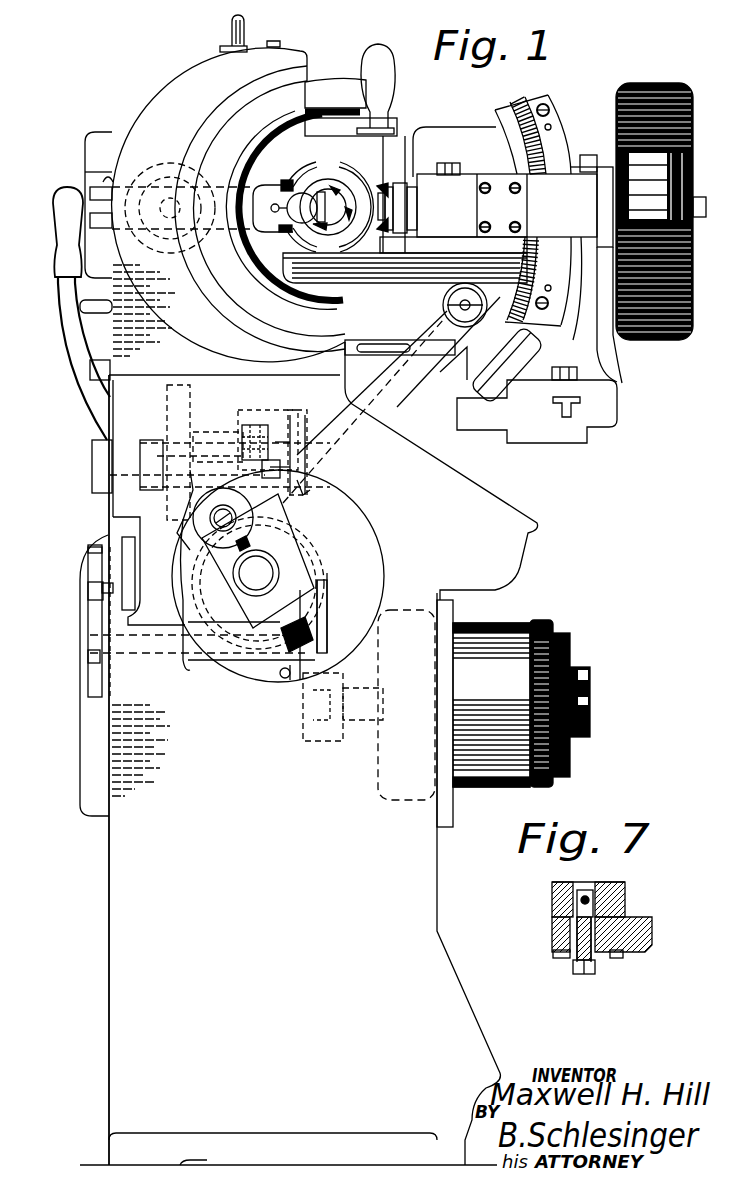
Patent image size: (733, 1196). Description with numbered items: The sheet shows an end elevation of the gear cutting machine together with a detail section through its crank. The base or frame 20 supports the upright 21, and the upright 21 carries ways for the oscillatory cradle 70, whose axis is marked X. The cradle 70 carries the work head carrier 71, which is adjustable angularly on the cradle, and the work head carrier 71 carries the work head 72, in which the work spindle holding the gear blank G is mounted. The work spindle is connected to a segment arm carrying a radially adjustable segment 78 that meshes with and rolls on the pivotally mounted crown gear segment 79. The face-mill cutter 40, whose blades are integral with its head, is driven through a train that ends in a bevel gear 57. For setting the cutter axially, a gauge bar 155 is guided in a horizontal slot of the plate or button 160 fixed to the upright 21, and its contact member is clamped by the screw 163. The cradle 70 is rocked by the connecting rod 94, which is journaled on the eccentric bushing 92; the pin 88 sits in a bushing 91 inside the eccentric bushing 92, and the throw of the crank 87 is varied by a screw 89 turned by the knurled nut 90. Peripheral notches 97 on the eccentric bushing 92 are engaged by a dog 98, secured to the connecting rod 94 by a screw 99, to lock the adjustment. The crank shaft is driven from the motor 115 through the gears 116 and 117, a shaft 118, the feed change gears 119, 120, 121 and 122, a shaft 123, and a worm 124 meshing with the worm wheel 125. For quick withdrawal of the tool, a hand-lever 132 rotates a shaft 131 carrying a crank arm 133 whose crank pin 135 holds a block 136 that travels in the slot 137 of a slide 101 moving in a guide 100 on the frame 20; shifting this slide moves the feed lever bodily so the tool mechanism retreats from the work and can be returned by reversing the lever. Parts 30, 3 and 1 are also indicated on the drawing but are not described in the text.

In FIG. 1, the base or frame 20 is at (113, 960).
In FIG. 1, the upright 21 is at (160, 102).
In FIG. 1, the pin 30 is at (232, 35).
In FIG. 1, the hand-lever 132 is at (63, 327).
In FIG. 1, the plate or button 160 is at (173, 163).
In FIG. 1, the face-mill cutter 40 is at (337, 200).
In FIG. 1, the axis of the cradle X is at (328, 205).
In FIG. 1, the bar 155 is at (262, 190).
In FIG. 1, the screw 163 is at (286, 180).
In FIG. 1, the oscillatory cradle 70 is at (333, 86).
In FIG. 1, the gear blank G is at (386, 185).
In FIG. 1, the work head carrier 71 is at (413, 247).
In FIG. 1, the work head 72 is at (463, 183).
In FIG. 1, the crown gear segment 79 is at (533, 96).
In FIG. 1, the radially adjustable segment 78 is at (538, 245).
In FIG. 1, the pivot 3 is at (447, 305).
In FIG. 1, the connecting rod 94 is at (400, 410).
In FIG. 7, the connecting rod 94 is at (648, 922).
In FIG. 1, the shaft 131 is at (152, 438).
In FIG. 1, the crank arm 133 is at (213, 447).
In FIG. 1, the crank pin 135 is at (264, 432).
In FIG. 1, the guide 100 is at (247, 413).
In FIG. 1, the block 136 is at (281, 418).
In FIG. 1, the slide 101 is at (287, 422).
In FIG. 1, the slot 137 is at (298, 443).
In FIG. 1, the screw 99 is at (287, 467).
In FIG. 1, the dog 98 is at (303, 495).
In FIG. 7, the dog 98 is at (623, 957).
In FIG. 1, the worm wheel 125 is at (323, 557).
In FIG. 1, the block 1 is at (258, 573).
In FIG. 1, the peripheral notches 97 is at (190, 505).
In FIG. 7, the peripheral notches 97 is at (553, 953).
In FIG. 1, the bevel gear 57 is at (205, 595).
In FIG. 1, the worm 124 is at (280, 660).
In FIG. 1, the knurled nut 90 is at (290, 680).
In FIG. 1, the feed change gear 120 is at (102, 612).
In FIG. 1, the feed change gear 121 is at (113, 587).
In FIG. 1, the shaft 123 is at (163, 647).
In FIG. 1, the feed change gear 119 is at (90, 663).
In FIG. 1, the shaft 118 is at (150, 648).
In FIG. 1, the feed change gear 122 is at (110, 683).
In FIG. 1, the gear 116 is at (315, 730).
In FIG. 1, the gear 117 is at (338, 688).
In FIG. 1, the motor 115 is at (510, 780).
In FIG. 7, the crank 87 is at (627, 884).
In FIG. 7, the screw 89 is at (587, 888).
In FIG. 7, the pin 88 is at (580, 972).
In FIG. 7, the bushing 91 is at (577, 963).
In FIG. 7, the eccentric bushing 92 is at (570, 960).